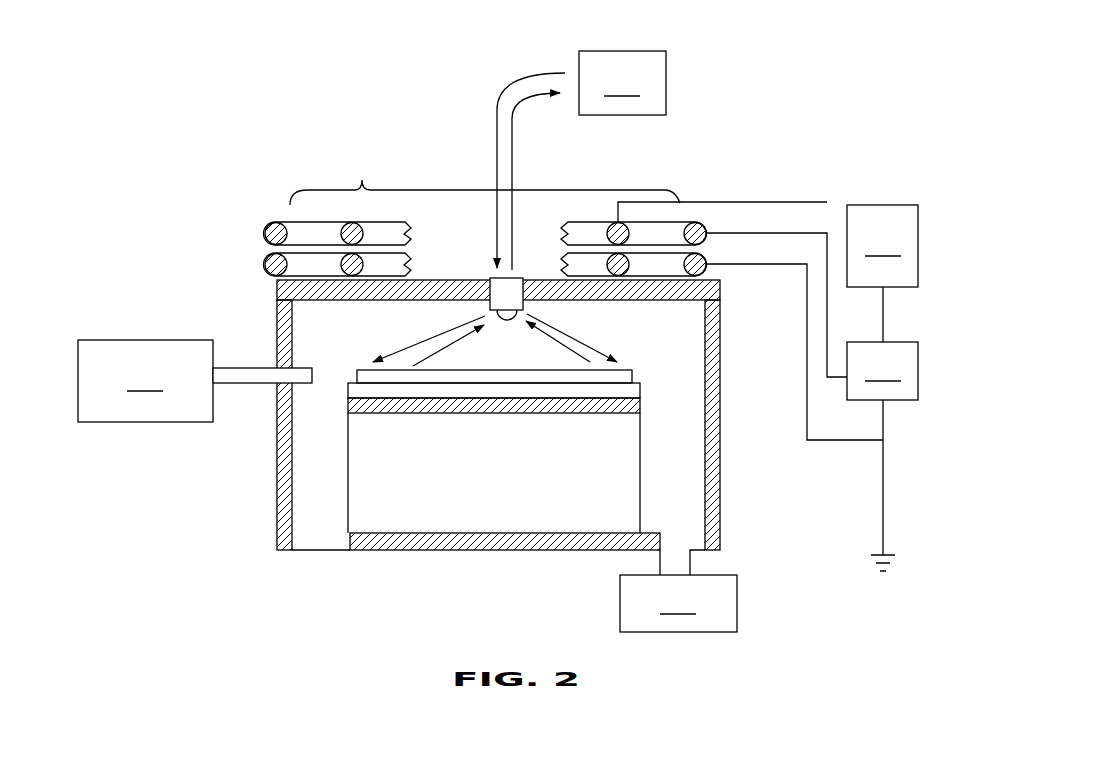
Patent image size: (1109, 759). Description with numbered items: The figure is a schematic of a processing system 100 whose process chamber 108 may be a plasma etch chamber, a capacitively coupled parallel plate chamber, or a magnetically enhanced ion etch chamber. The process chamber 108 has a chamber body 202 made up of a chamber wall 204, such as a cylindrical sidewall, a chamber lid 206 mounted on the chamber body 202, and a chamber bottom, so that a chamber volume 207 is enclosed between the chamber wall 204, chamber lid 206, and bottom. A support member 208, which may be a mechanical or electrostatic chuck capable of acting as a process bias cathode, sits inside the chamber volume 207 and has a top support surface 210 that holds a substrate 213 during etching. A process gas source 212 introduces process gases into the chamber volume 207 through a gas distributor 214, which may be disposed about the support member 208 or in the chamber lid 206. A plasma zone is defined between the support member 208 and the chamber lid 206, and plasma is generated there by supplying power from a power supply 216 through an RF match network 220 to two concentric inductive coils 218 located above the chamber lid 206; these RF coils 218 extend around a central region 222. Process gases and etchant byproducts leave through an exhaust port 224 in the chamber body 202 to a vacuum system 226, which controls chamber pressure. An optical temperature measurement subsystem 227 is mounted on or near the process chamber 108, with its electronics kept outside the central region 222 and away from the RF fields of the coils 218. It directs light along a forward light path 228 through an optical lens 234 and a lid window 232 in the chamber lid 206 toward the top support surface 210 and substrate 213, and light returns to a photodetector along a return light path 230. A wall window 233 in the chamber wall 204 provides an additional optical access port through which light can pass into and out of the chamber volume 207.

The processing system 100 is at (772, 55).
The process chamber 108 is at (749, 171).
The chamber body 202 is at (727, 521).
The chamber wall 204 is at (720, 484).
The chamber lid 206 is at (278, 290).
The chamber volume 207 is at (280, 482).
The support member 208 is at (517, 393).
The top support surface 210 is at (372, 382).
The process gas source 212 is at (145, 381).
The substrate 213 is at (567, 377).
The gas distributor 214 is at (242, 368).
The power supply 216 is at (882, 246).
The inductive coils 218 is at (322, 232).
The RF match network 220 is at (882, 429).
The central region 222 is at (574, 295).
The exhaust port 224 is at (693, 563).
The vacuum system 226 is at (678, 603).
The optical temperature measurement subsystem 227 is at (622, 83).
The forward light path 228 is at (506, 107).
The return light path 230 is at (519, 117).
The lid window 232 is at (515, 292).
The wall window 233 is at (713, 342).
The optical lens 234 is at (497, 328).